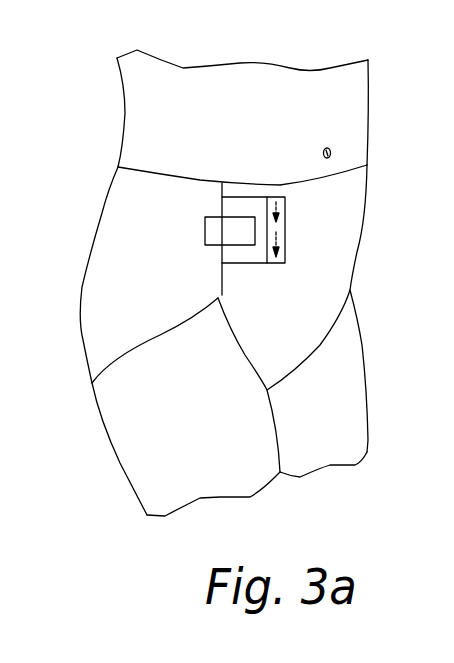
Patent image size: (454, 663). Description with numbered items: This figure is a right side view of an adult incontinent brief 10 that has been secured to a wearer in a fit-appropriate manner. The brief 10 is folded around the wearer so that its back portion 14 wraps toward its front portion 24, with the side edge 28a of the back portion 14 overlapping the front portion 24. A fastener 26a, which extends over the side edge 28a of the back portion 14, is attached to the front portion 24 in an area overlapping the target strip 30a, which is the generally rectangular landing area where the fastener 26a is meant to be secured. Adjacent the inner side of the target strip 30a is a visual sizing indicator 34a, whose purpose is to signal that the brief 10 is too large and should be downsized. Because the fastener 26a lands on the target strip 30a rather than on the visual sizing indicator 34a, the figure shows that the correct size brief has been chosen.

The adult incontinent brief 10 is at (205, 160).
The back portion 14 is at (110, 208).
The front portion 24 is at (357, 252).
The fastener 26a is at (205, 232).
The side edge 28a is at (225, 295).
The target strip 30a is at (255, 217).
The visual sizing indicator 34a is at (285, 218).